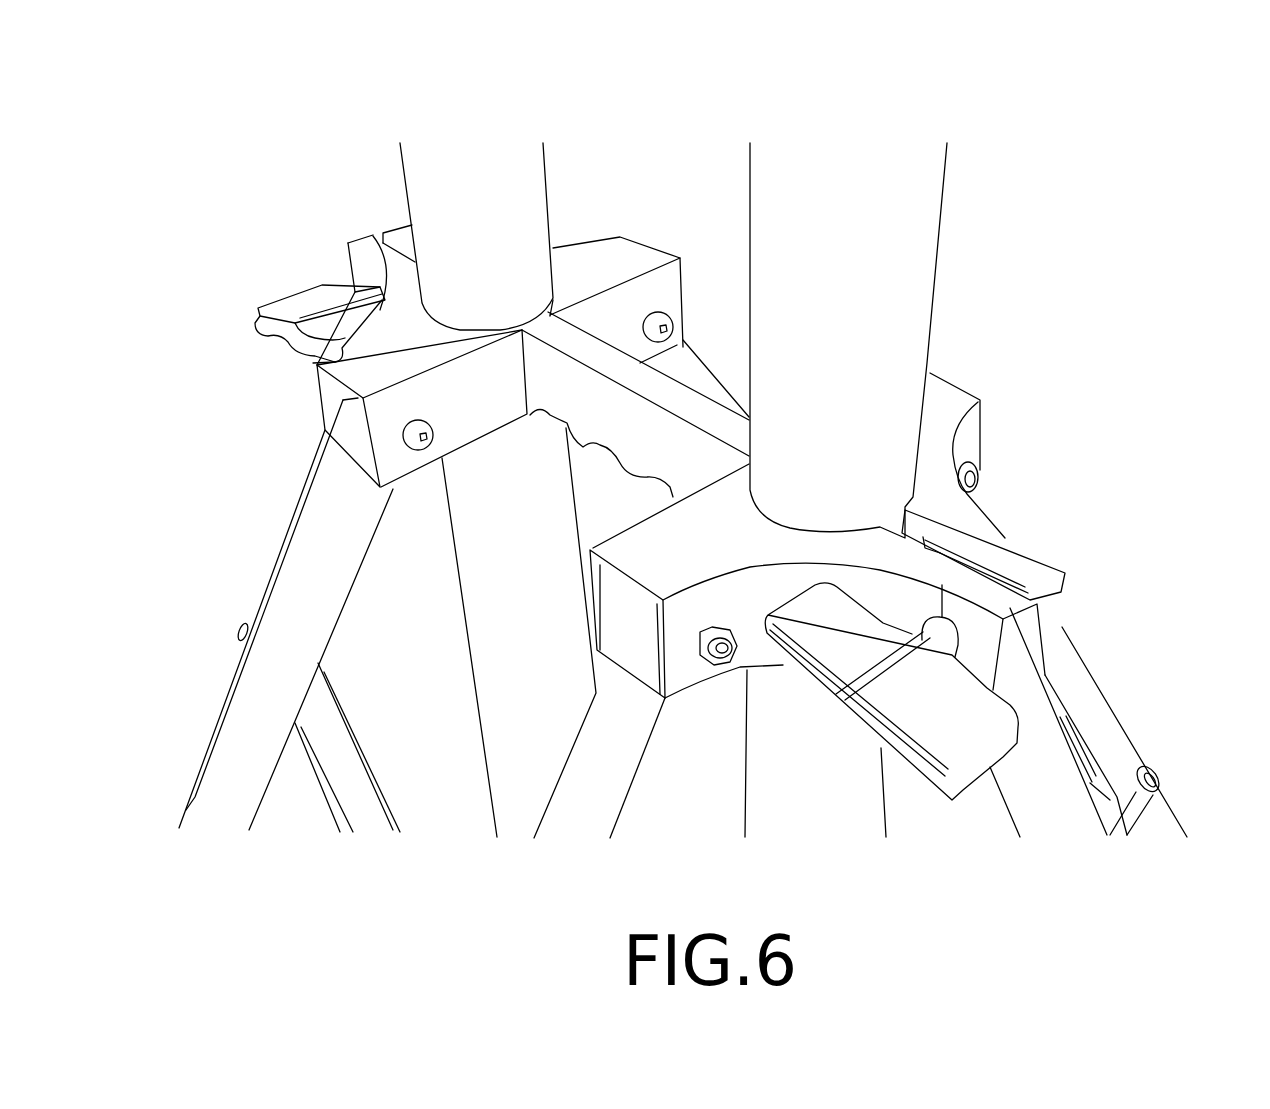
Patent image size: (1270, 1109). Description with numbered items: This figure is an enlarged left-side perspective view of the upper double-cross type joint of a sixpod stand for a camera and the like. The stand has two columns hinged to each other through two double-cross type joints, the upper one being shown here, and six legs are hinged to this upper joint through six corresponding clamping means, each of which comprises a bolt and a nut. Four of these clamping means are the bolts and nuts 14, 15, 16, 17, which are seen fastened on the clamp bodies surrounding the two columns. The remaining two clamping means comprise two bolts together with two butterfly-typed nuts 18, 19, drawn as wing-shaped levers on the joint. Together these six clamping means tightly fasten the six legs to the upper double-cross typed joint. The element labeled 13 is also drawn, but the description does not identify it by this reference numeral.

The clamp body 13 is at (668, 410).
The bolt and nut 14 is at (721, 655).
The bolt and nut 15 is at (982, 471).
The bolt and nut 16 is at (408, 436).
The bolt and nut 17 is at (657, 321).
The butterfly-typed nut 18 is at (953, 703).
The butterfly-typed nut 19 is at (297, 303).